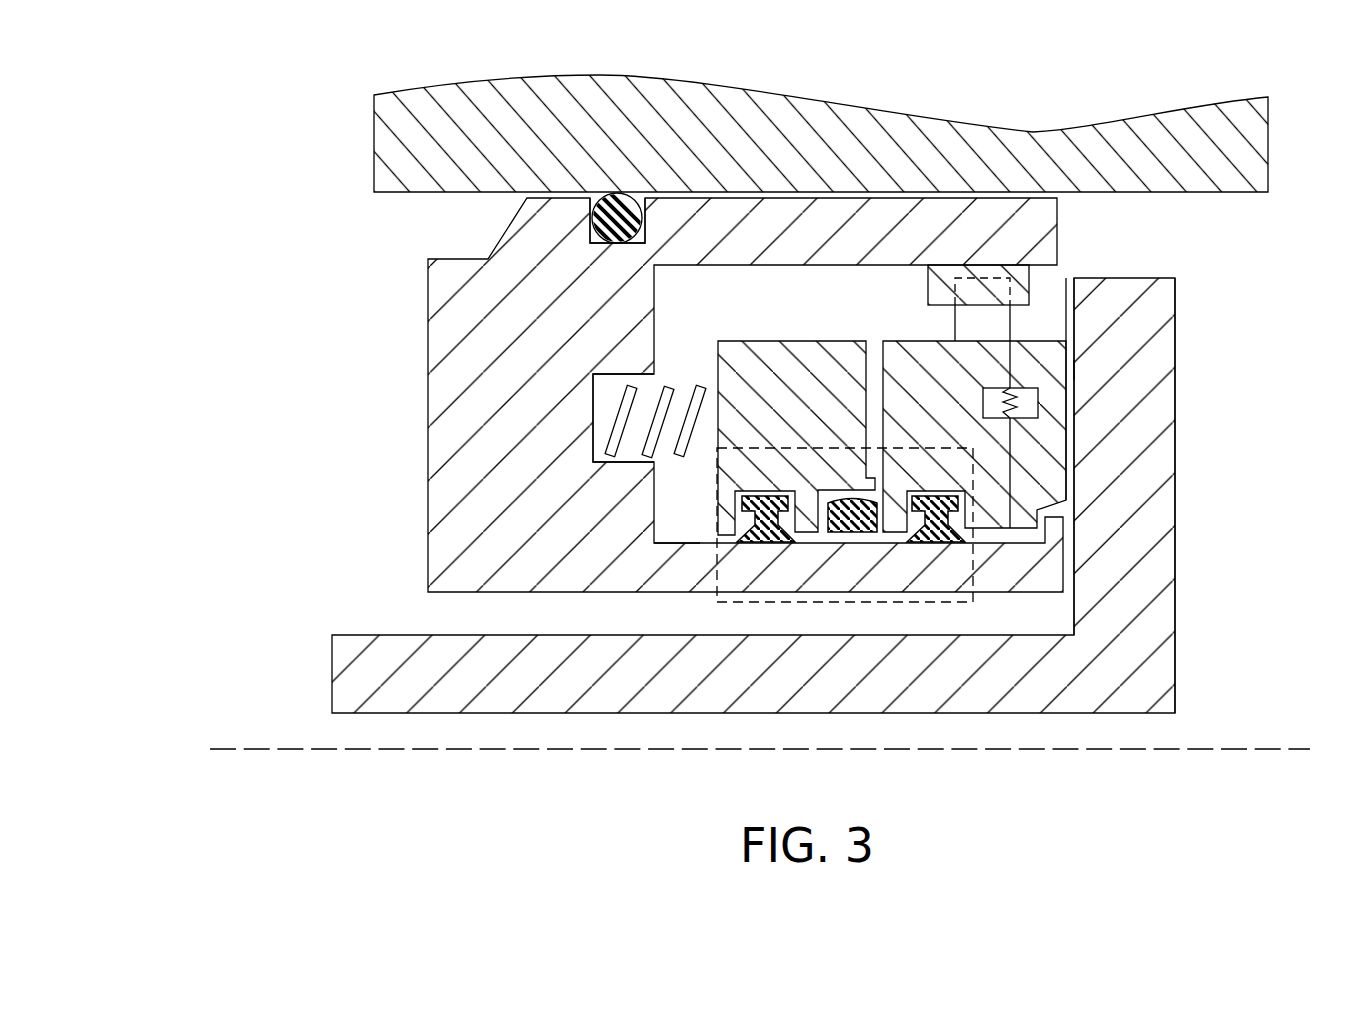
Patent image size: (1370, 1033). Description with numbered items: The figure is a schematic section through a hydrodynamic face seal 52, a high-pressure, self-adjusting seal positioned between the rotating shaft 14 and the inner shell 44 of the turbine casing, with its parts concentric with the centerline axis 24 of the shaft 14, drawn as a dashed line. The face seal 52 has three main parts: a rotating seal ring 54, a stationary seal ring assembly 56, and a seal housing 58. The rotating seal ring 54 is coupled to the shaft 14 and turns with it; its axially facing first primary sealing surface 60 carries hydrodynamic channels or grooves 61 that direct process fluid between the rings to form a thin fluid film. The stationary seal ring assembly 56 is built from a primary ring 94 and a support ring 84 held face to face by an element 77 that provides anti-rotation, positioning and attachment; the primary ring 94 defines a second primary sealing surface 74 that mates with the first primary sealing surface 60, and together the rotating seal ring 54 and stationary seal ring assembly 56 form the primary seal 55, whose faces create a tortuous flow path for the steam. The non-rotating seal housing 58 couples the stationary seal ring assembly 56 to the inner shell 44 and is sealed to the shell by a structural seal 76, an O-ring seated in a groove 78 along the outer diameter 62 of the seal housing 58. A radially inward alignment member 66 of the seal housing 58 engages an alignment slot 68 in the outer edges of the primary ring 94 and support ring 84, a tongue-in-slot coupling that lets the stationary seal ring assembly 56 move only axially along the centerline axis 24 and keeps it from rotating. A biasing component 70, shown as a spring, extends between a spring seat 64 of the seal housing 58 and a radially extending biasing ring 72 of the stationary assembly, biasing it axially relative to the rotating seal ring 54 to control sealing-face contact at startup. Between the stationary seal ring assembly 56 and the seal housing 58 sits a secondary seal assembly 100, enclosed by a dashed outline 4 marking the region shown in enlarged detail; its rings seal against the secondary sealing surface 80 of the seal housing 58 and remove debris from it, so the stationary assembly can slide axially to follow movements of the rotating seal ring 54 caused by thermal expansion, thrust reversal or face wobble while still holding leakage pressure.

The detail region 4 is at (887, 602).
The shaft 14 is at (345, 678).
The centerline axis 24 is at (246, 762).
The inner shell 44 is at (386, 196).
The face seal 52 is at (256, 232).
The rotating seal ring 54 is at (1143, 402).
The primary seal 55 is at (1268, 394).
The stationary seal ring assembly 56 is at (1080, 479).
The seal housing 58 is at (427, 348).
The first primary sealing surface 60 is at (1074, 287).
The channels or grooves 61 is at (1067, 371).
The outer diameter 62 is at (560, 183).
The spring seat 64 is at (610, 364).
The alignment member 66 is at (928, 281).
The alignment slot 68 is at (980, 292).
The biasing component 70 is at (650, 417).
The biasing ring 72 is at (746, 342).
The second primary sealing surface 74 is at (1066, 390).
The structural seal 76 is at (603, 195).
The element 77 is at (1010, 392).
The groove 78 is at (643, 192).
The secondary sealing surface 80 is at (668, 545).
The support ring 84 is at (1040, 532).
The primary ring 94 is at (1055, 495).
The secondary seal assembly 100 is at (788, 562).